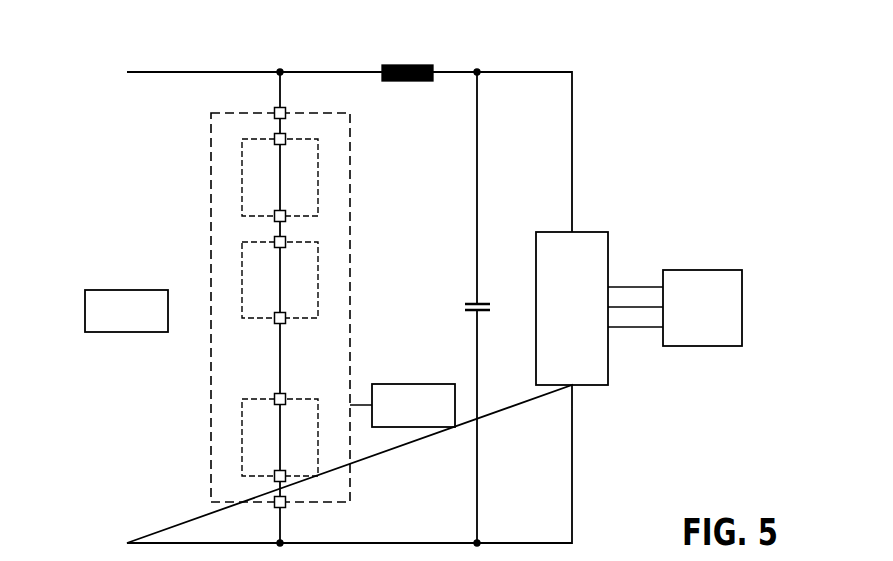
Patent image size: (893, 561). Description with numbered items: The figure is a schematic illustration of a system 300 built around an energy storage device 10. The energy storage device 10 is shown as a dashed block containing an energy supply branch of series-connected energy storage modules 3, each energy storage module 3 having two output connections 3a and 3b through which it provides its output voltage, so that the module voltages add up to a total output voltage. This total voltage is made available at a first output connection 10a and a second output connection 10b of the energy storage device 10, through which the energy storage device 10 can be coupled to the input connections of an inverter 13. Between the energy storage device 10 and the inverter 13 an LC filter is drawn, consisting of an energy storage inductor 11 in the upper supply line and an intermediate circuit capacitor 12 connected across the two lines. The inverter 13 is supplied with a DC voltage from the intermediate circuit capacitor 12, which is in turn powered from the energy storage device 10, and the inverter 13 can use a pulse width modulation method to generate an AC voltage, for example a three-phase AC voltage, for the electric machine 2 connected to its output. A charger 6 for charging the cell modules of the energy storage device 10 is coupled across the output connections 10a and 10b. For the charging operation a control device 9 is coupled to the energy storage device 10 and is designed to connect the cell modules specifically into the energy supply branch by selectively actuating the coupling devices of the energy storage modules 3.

The electrical system 300 is at (82, 112).
The electric machine 2 is at (703, 270).
The energy storage module 3 is at (318, 185).
The output connection 3a is at (275, 139).
The output connection 3b is at (275, 218).
The charger 6 is at (95, 290).
The control device 9 is at (413, 384).
The energy storage device 10 is at (350, 478).
The first output connection 10a is at (275, 113).
The second output connection 10b is at (275, 504).
The energy storage inductor 11 is at (410, 81).
The intermediate circuit capacitor 12 is at (470, 303).
The inverter 13 is at (602, 232).